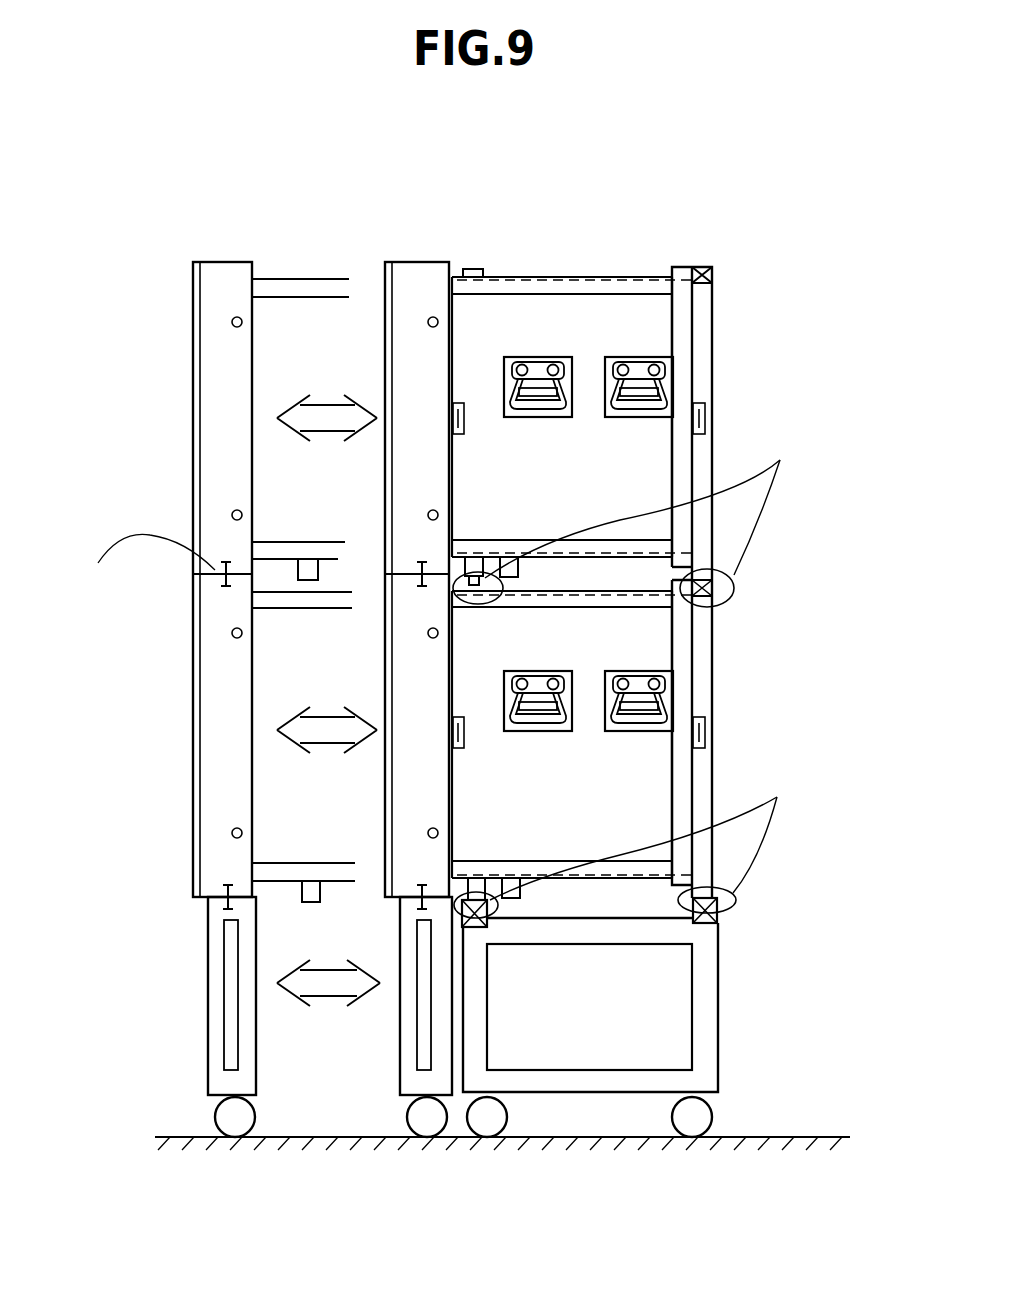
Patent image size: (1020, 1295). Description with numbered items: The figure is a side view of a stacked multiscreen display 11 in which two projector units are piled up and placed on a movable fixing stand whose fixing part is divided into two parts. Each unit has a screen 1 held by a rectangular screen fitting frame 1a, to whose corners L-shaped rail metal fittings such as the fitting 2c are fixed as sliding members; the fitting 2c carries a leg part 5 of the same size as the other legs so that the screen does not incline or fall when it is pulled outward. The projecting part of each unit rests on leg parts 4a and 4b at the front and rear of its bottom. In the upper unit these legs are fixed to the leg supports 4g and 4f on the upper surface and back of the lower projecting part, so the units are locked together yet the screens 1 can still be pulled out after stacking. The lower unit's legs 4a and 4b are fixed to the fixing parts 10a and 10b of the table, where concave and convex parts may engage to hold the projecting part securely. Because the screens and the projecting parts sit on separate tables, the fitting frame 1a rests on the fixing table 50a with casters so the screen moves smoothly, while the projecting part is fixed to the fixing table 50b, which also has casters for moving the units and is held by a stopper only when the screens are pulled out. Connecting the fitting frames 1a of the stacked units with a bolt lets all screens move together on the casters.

The cabinet connecting system 11 is at (180, 255).
The screen 1 is at (193, 432).
The screen fitting frame 1a is at (229, 285).
The L-shaped rail metal fitting 2c is at (340, 872).
The leg part 4a is at (476, 556).
The leg part 4b is at (708, 560).
The leg support 4f is at (712, 590).
The leg support 4g is at (478, 268).
The leg part 5 is at (318, 566).
The fixing part 10a is at (487, 915).
The fixing part 10b is at (717, 912).
The fixing table 50a is at (415, 1043).
The fixing table 50b is at (718, 1032).